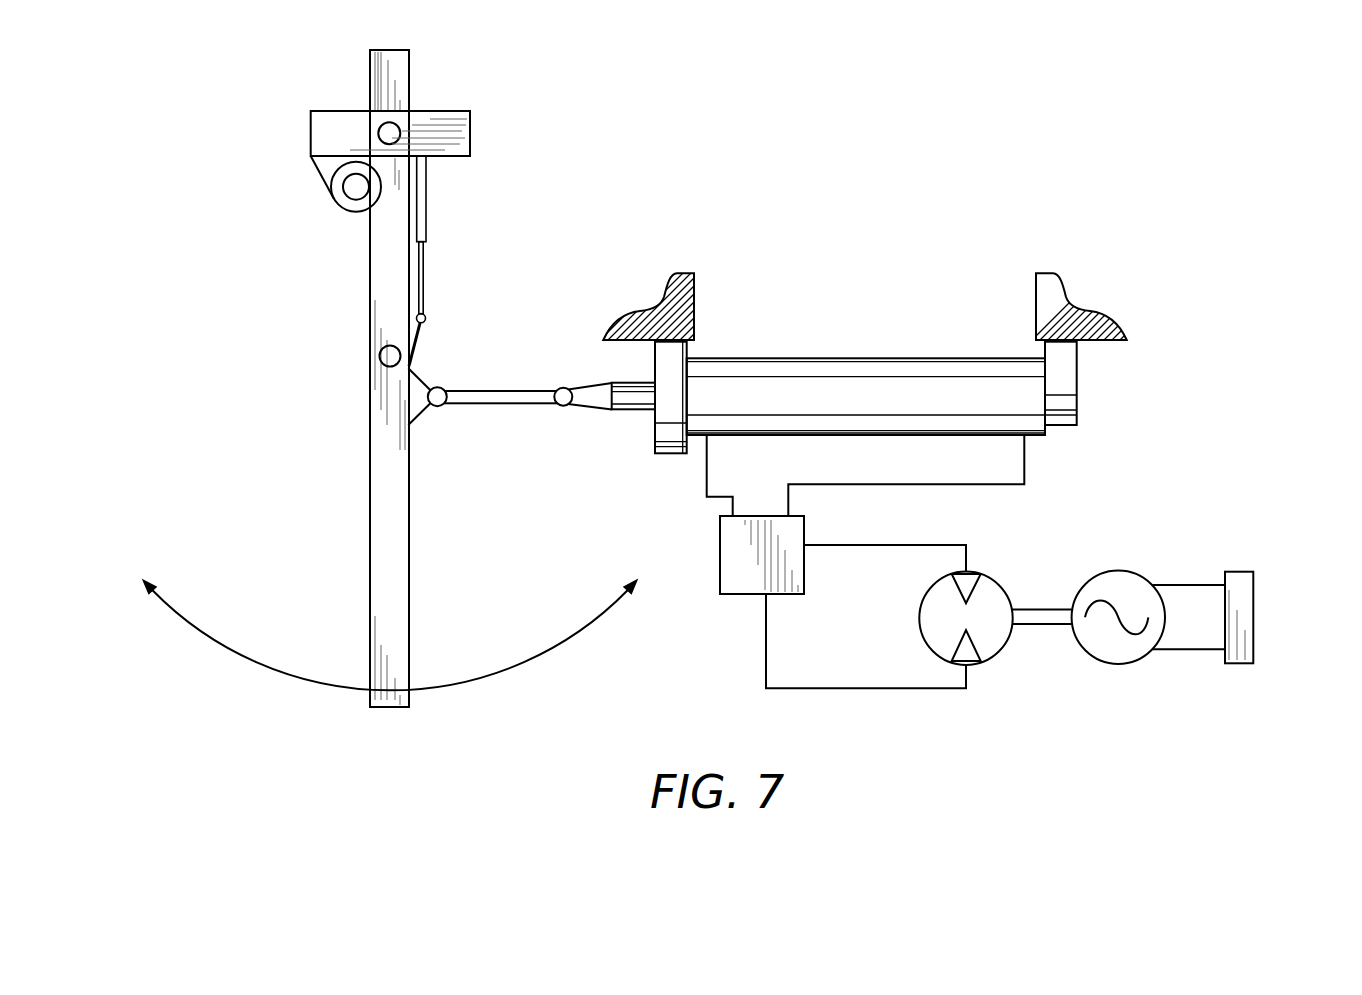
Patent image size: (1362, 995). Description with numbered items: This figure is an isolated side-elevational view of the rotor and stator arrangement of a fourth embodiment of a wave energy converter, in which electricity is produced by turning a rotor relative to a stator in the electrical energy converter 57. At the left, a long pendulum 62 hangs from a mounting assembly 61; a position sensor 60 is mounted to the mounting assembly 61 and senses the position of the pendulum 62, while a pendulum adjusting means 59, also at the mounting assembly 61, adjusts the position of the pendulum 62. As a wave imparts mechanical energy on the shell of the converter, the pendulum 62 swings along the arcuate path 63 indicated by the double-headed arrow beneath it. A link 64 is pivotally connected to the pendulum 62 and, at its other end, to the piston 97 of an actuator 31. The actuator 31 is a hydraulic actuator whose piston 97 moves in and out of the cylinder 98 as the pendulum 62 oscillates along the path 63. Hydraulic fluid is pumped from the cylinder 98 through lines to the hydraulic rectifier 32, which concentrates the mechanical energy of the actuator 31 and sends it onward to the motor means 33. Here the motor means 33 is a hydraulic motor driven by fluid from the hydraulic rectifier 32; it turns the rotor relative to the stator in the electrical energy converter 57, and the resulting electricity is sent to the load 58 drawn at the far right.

The actuator 31 is at (938, 358).
The hydraulic rectifier 32 is at (742, 595).
The motor means 33 is at (992, 657).
The electrical energy converter 57 is at (1123, 573).
The load 58 is at (1253, 590).
The pendulum adjusting means 59 is at (345, 213).
The position sensor 60 is at (422, 188).
The mounting assembly 61 is at (453, 115).
The pendulum 62 is at (367, 478).
The path 63 is at (535, 653).
The link 64 is at (535, 390).
The piston 97 is at (637, 413).
The cylinder 98 is at (810, 368).